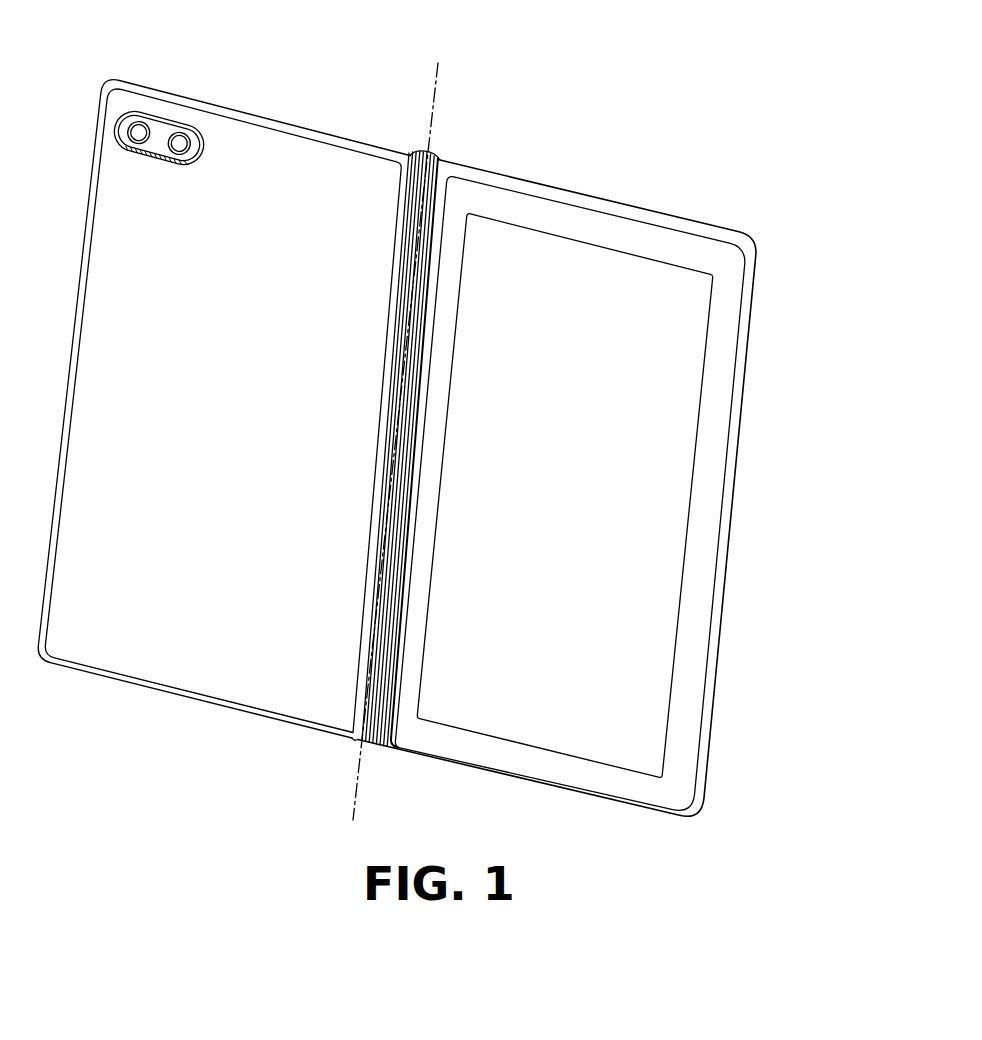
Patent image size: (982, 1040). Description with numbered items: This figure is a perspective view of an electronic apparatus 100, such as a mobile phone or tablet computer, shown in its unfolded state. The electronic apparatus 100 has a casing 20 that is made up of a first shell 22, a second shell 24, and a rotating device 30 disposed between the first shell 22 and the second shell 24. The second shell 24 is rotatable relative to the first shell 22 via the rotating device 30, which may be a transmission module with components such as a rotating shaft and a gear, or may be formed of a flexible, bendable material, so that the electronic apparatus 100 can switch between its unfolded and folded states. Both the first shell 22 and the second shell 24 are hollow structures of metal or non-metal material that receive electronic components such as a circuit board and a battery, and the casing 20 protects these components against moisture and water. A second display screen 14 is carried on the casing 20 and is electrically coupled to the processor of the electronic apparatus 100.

The electronic apparatus 100 is at (434, 412).
The casing 20 is at (434, 439).
The first shell 22 is at (594, 453).
The second shell 24 is at (290, 124).
The second display screen 14 is at (658, 408).
The rotating device 30 is at (353, 735).